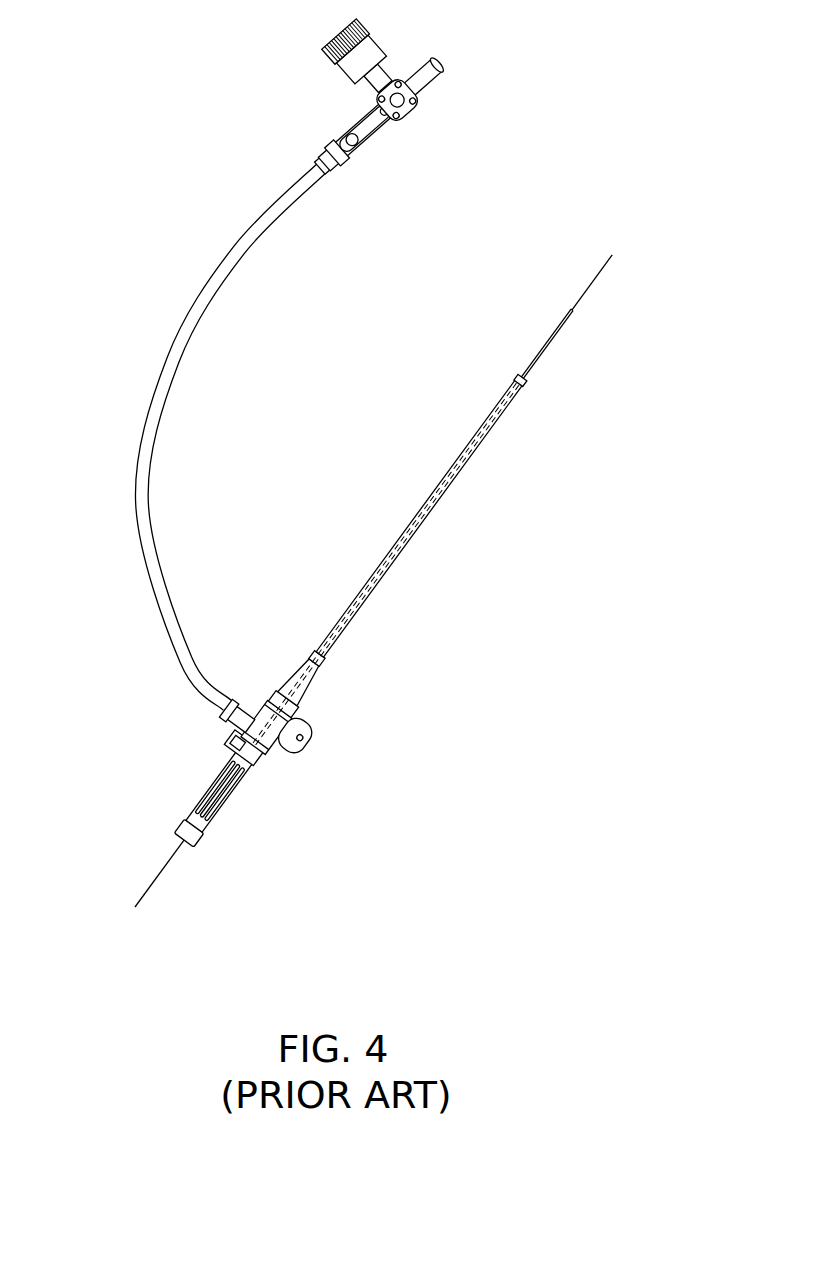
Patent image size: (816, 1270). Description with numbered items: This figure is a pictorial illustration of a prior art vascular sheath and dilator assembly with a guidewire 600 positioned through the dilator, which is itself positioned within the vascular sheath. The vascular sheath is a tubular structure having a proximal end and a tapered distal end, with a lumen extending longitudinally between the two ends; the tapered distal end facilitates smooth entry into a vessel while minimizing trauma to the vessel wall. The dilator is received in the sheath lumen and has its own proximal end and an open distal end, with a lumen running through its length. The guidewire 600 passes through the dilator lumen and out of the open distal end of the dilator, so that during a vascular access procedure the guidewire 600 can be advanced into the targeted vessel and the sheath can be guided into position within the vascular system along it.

The guidewire 600 is at (604, 268).